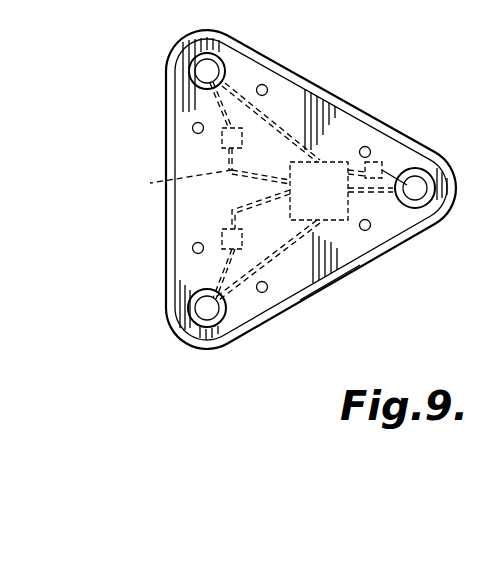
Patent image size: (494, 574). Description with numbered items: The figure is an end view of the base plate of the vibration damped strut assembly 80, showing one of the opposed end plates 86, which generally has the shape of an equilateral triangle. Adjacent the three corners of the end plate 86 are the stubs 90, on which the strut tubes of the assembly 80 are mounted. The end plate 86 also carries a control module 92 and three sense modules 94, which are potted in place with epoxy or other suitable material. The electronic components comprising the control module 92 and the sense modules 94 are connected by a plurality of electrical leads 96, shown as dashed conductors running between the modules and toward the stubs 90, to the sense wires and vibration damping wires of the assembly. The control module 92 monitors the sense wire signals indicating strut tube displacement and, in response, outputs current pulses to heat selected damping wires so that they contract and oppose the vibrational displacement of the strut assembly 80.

The vibration damped strut assembly 80 is at (175, 346).
The end plate 86 is at (350, 116).
The stub 90 is at (192, 85).
The control module 92 is at (352, 267).
The sense module 94 is at (222, 136).
The electrical lead 96 is at (272, 125).